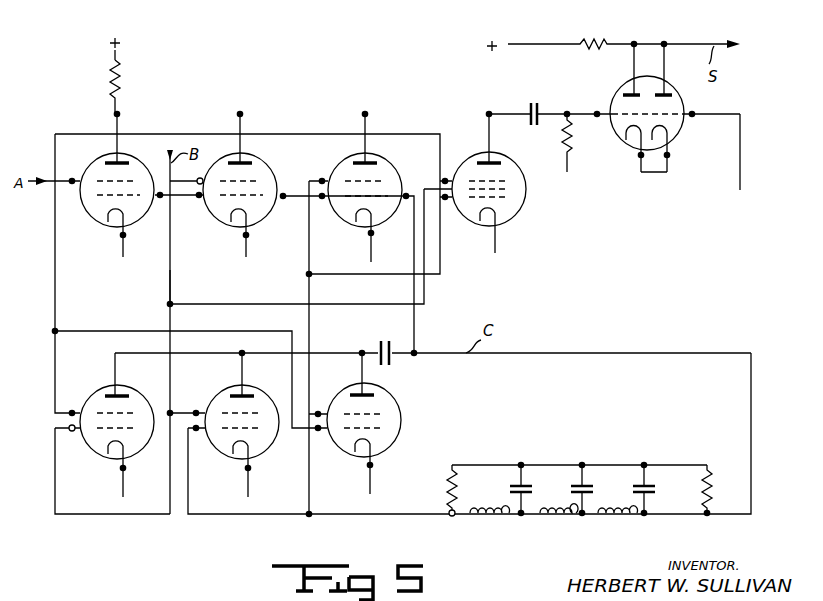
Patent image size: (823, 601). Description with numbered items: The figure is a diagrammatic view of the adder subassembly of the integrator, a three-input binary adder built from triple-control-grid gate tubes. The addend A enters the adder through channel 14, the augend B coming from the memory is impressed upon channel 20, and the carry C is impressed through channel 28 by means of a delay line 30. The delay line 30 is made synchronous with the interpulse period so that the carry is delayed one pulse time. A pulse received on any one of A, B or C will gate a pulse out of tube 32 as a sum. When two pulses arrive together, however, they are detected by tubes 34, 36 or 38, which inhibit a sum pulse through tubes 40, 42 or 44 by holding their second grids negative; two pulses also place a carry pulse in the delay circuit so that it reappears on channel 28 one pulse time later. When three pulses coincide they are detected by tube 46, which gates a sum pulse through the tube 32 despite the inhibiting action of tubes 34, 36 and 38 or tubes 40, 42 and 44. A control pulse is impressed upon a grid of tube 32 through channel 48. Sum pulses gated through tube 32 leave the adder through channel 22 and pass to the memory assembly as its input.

The channel 14 is at (28, 181).
The channel 20 is at (172, 290).
The channel 22 is at (700, 44).
The channel 28 is at (530, 353).
The delay line 30 is at (542, 458).
The tube 32 is at (674, 140).
The tube 34 is at (100, 457).
The tube 36 is at (230, 457).
The tube 38 is at (348, 452).
The tube 40 is at (104, 225).
The tube 42 is at (216, 223).
The tube 44 is at (347, 225).
The tube 46 is at (521, 213).
The channel 48 is at (741, 173).